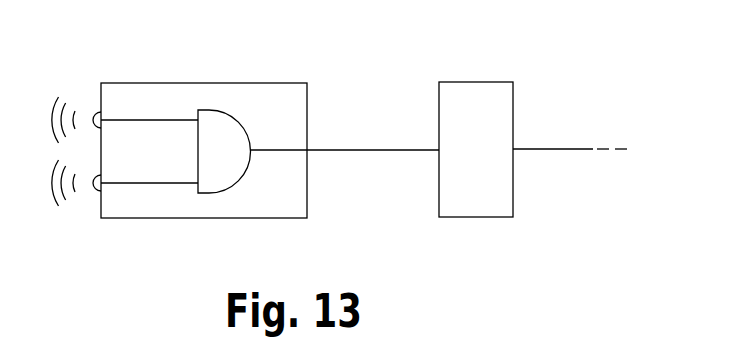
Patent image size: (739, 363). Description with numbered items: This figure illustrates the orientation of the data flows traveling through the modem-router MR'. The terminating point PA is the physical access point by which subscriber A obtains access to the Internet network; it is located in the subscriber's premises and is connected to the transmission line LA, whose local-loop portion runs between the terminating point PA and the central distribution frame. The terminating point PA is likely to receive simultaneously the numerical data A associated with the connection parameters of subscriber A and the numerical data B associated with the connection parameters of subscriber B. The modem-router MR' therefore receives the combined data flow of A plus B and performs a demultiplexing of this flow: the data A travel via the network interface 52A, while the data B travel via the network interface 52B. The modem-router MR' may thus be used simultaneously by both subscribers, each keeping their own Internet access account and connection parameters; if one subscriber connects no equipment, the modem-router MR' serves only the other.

The network interface 52A is at (94, 114).
The network interface 52B is at (94, 189).
The modem-router MR' is at (270, 118).
The terminating point PA is at (468, 91).
The transmission line LA is at (562, 149).